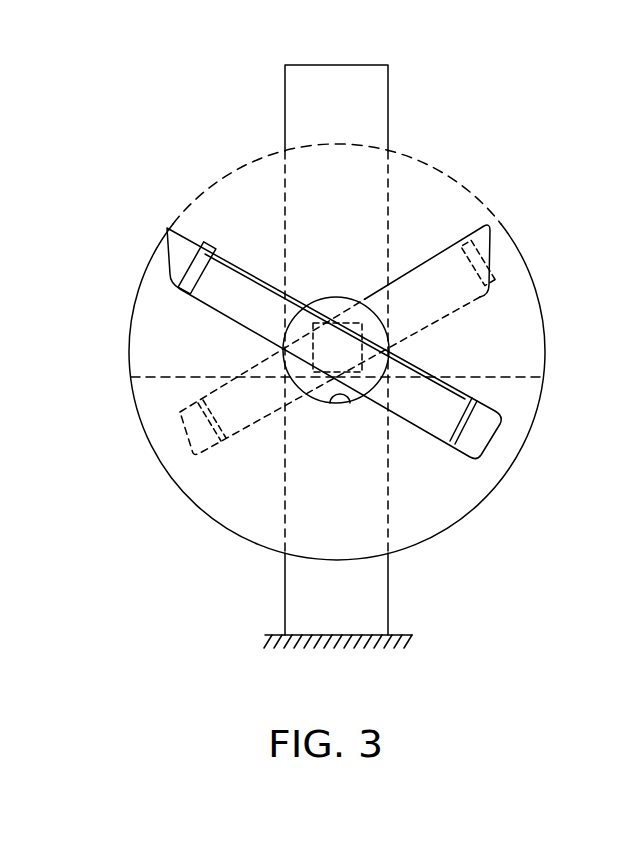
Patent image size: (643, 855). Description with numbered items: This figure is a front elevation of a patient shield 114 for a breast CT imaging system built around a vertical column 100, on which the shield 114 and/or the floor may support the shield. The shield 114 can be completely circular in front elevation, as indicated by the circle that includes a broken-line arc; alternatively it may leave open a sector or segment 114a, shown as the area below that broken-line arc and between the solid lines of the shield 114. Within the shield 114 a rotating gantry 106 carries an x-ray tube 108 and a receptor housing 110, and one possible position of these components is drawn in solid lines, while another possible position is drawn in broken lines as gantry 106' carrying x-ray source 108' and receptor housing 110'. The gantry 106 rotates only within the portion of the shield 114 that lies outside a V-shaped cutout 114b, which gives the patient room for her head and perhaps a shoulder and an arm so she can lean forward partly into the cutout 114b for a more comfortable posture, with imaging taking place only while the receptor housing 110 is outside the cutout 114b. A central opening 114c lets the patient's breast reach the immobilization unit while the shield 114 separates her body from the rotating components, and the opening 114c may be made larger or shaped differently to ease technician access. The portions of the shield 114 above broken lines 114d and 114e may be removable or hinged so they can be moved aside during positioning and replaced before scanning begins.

The column 100 is at (390, 612).
The gantry 106 is at (385, 343).
The gantry 106' is at (272, 339).
The x-ray tube 108 is at (513, 454).
The x-ray source 108' is at (172, 475).
The receptor housing 110 is at (149, 262).
The receptor housing 110' is at (529, 244).
The patient shield 114 is at (477, 503).
The sector or segment 114a is at (410, 190).
The V-shaped cutout 114b is at (323, 283).
The central opening 114c is at (342, 400).
The broken line 114d is at (178, 376).
The broken line 114e is at (500, 378).